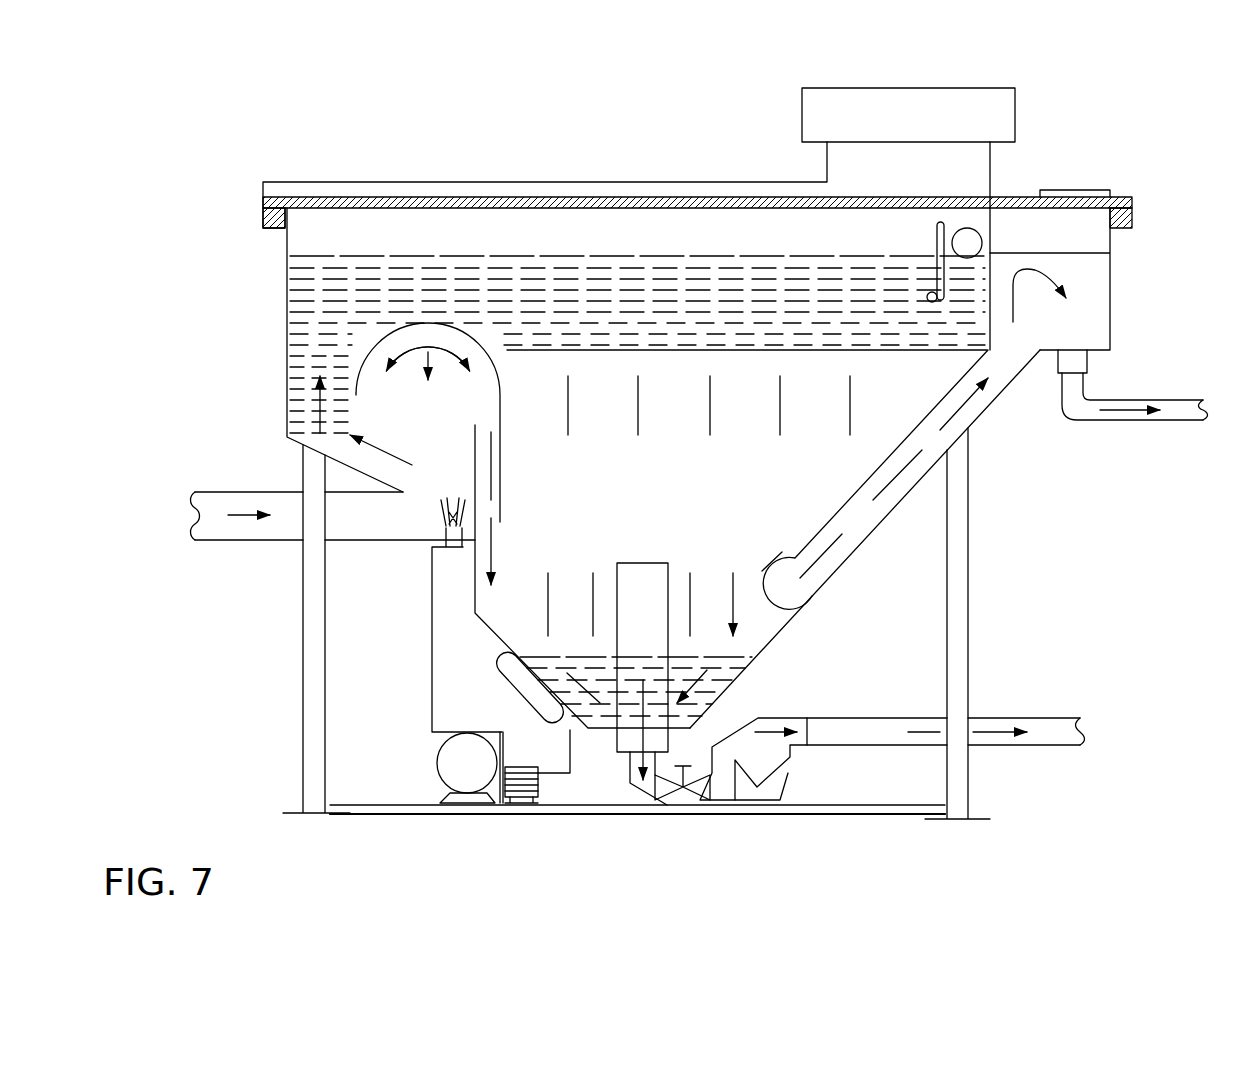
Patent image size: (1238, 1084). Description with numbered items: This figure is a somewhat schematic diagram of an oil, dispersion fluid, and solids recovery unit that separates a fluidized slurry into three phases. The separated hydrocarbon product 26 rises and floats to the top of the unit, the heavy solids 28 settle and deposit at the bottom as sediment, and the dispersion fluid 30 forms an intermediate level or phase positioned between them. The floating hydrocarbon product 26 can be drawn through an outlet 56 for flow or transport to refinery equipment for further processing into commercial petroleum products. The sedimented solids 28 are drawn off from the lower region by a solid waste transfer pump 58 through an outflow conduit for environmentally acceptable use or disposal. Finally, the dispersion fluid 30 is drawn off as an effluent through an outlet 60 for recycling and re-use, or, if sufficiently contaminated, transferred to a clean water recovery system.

The separated hydrocarbon product 26 is at (612, 288).
The heavy solids 28 is at (730, 682).
The dispersion fluid 30 is at (818, 497).
The outlet 56 is at (968, 242).
The solid waste transfer pump 58 is at (770, 767).
The outlet 60 is at (1100, 313).